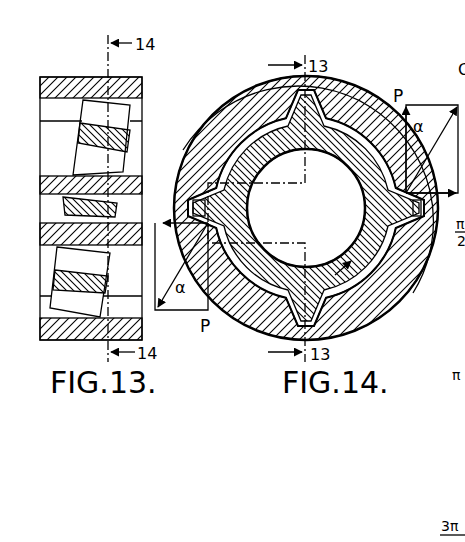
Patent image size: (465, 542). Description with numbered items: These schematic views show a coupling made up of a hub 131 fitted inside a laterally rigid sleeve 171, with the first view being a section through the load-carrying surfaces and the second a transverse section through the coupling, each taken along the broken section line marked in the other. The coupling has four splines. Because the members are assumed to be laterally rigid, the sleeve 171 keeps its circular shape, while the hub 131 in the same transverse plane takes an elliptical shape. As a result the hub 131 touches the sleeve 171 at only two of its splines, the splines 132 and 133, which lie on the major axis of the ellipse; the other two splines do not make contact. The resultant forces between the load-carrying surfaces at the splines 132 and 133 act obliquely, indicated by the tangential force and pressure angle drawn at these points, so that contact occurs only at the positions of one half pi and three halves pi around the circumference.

In FIG. 13, the hub 131 is at (66, 258).
In FIG. 14, the hub 131 is at (368, 173).
In FIG. 14, the spline 132 is at (213, 222).
In FIG. 14, the spline 133 is at (409, 207).
In FIG. 13, the sleeve 171 is at (50, 335).
In FIG. 14, the sleeve 171 is at (380, 295).